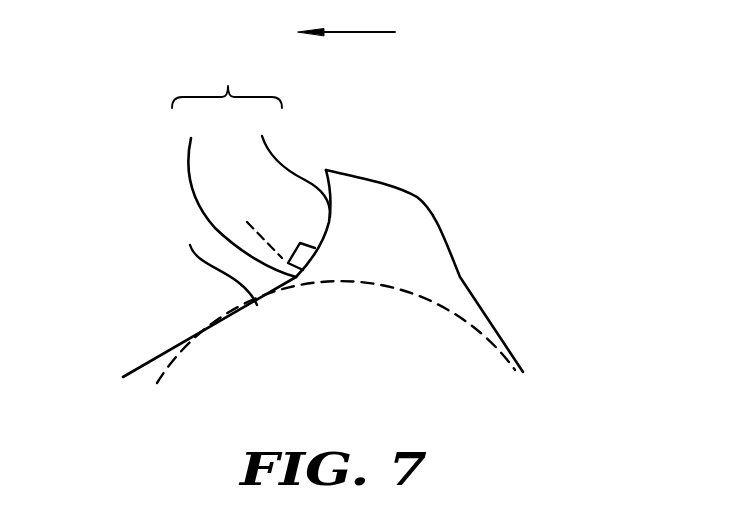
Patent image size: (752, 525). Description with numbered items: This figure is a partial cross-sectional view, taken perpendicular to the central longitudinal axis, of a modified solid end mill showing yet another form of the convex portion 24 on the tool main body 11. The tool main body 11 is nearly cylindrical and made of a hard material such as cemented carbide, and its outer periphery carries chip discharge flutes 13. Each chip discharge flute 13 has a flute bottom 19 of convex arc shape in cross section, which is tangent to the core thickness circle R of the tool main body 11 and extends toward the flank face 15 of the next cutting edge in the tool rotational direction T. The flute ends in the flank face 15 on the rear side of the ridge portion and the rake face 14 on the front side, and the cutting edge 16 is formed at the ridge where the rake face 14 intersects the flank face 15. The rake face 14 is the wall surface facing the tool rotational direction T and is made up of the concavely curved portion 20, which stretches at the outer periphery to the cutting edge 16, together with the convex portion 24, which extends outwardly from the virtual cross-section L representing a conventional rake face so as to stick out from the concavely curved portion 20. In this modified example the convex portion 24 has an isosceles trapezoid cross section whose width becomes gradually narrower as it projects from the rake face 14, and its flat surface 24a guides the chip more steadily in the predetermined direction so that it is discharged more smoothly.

The tool main body 11 is at (473, 210).
The chip discharge flute 13 is at (173, 263).
The rake face 14 is at (227, 75).
The flank face 15 is at (398, 187).
The cutting edge 16 is at (327, 170).
The flute bottom 19 is at (213, 255).
The concavely curved portion 20 is at (289, 159).
The convex portion 24 is at (239, 189).
The flat surface 24a is at (300, 243).
The virtual cross-section L is at (254, 228).
The core thickness circle R is at (437, 307).
The tool rotational direction T is at (346, 18).